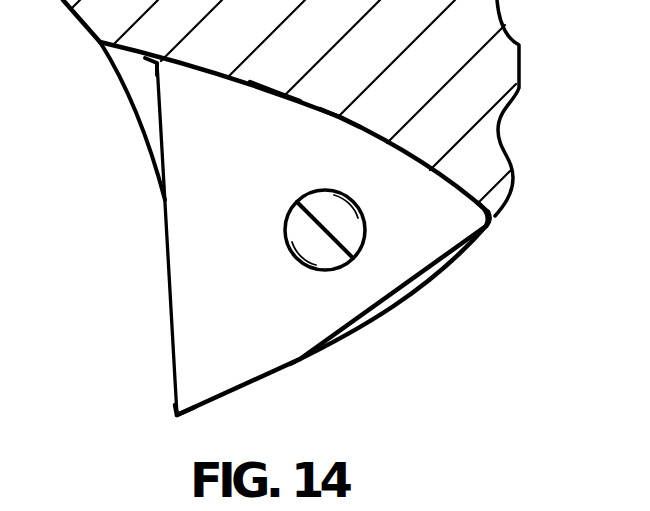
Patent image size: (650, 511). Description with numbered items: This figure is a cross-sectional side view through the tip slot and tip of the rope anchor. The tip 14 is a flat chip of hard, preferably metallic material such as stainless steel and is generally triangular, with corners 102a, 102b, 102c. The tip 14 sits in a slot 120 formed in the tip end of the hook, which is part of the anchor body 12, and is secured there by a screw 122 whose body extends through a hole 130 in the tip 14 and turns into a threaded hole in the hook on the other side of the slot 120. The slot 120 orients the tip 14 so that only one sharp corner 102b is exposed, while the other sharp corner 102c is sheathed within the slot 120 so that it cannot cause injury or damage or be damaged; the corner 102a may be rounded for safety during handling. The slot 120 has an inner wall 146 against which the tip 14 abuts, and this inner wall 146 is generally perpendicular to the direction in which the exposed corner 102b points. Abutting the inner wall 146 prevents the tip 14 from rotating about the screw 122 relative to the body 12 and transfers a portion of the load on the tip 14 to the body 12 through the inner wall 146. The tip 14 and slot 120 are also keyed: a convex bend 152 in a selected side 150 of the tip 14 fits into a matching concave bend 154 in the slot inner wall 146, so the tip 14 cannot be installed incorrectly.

The body 12 is at (526, 60).
The tip 14 is at (407, 310).
The corner 102a is at (495, 219).
The sharp corner 102b is at (175, 417).
The sharp corner 102c is at (153, 64).
The slot 120 is at (147, 111).
The screw 122 is at (298, 228).
The hole 130 is at (366, 230).
The inner wall 146 is at (240, 80).
The side 150 is at (267, 96).
The convex bend 152 is at (337, 119).
The concave bend 154 is at (347, 113).